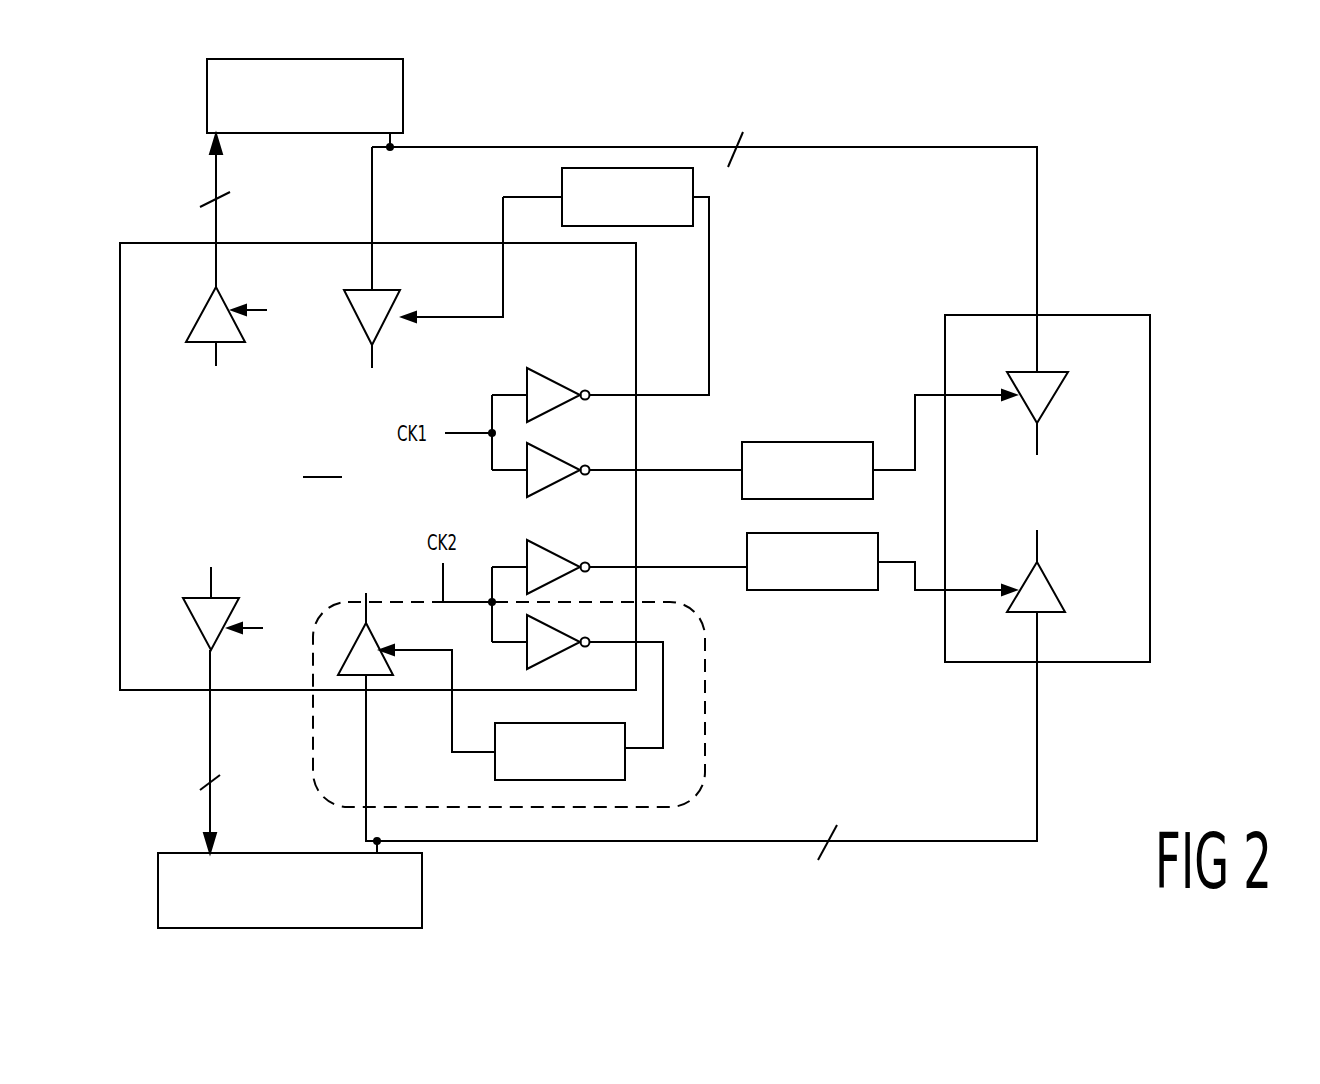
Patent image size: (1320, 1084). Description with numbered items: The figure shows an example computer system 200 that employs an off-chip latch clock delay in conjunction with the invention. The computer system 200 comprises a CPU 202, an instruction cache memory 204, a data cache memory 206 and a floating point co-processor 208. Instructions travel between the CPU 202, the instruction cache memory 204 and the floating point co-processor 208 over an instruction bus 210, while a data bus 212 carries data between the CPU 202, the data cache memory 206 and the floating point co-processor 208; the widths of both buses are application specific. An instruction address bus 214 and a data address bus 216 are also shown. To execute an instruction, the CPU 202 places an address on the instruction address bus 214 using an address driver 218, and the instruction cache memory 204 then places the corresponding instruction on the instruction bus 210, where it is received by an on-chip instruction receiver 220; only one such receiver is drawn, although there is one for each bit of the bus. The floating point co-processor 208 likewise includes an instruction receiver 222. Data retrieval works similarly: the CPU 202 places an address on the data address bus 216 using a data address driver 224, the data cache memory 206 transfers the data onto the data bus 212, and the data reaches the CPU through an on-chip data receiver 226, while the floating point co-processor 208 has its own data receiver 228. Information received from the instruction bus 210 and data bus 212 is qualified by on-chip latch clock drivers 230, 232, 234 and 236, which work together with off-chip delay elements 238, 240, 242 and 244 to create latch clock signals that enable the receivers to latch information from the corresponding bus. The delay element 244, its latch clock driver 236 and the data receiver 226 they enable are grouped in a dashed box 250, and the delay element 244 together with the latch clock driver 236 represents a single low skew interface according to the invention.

The computer system 200 is at (181, 170).
The CPU 202 is at (118, 490).
The instruction cache memory 204 is at (405, 97).
The data cache memory 206 is at (422, 863).
The floating point co-processor 208 is at (1085, 315).
The instruction bus 210 is at (827, 148).
The data bus 212 is at (938, 847).
The instruction address bus 214 is at (214, 212).
The data address bus 216 is at (208, 725).
The address driver 218 is at (190, 342).
The instruction receiver 220 is at (391, 291).
The instruction receiver 222 is at (1058, 397).
The data address driver 224 is at (183, 598).
The data receiver 226 is at (372, 640).
The data receiver 228 is at (1048, 577).
The latch clock driver 230 is at (556, 382).
The latch clock driver 232 is at (560, 478).
The latch clock driver 234 is at (562, 552).
The latch clock driver 236 is at (558, 658).
The off-chip delay element 238 is at (692, 232).
The off-chip delay element 240 is at (795, 442).
The off-chip delay element 242 is at (815, 597).
The off-chip delay element 244 is at (492, 770).
The dashed box 250 is at (705, 700).